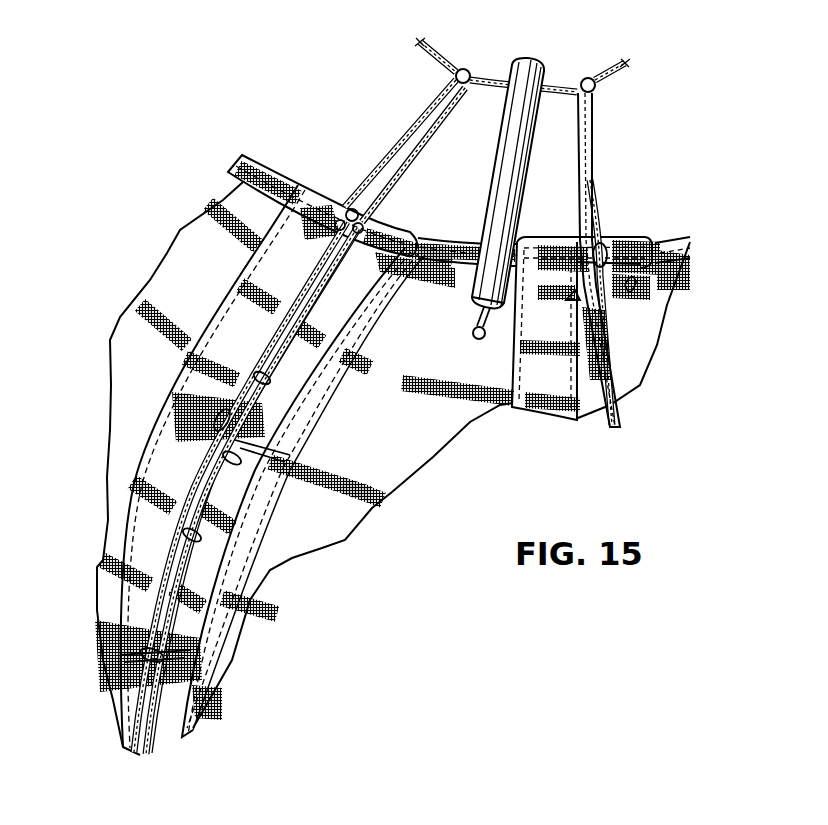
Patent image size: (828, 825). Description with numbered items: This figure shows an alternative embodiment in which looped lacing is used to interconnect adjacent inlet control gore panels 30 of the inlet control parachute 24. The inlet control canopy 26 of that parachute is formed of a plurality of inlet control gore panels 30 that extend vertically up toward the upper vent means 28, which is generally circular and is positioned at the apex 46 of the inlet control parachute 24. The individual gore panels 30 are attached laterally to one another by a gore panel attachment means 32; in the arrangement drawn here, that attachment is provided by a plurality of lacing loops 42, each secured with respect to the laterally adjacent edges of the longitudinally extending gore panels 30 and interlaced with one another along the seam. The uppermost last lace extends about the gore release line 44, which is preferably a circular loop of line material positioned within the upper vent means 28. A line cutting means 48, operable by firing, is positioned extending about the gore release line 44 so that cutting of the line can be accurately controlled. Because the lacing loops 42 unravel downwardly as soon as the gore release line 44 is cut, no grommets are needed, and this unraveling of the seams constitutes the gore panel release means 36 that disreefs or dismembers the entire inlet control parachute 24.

The inlet control parachute 24 is at (224, 200).
The inlet control canopy 26 is at (432, 240).
The upper vent means 28 is at (372, 133).
The inlet control gore panels 30 is at (526, 250).
The gore panel attachment means 32 is at (458, 83).
The gore panel release means 36 is at (514, 118).
The lacing loops 42 is at (572, 295).
The gore release line 44 is at (497, 78).
The apex 46 is at (572, 72).
The line cutting means 48 is at (470, 298).